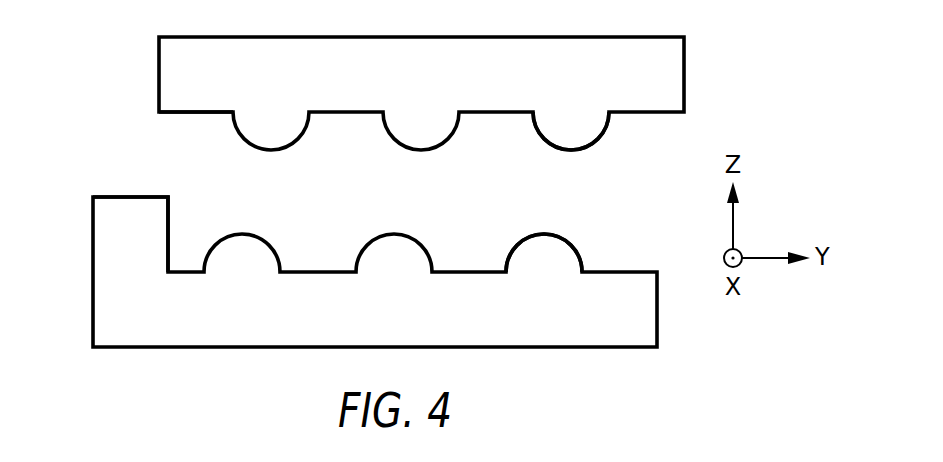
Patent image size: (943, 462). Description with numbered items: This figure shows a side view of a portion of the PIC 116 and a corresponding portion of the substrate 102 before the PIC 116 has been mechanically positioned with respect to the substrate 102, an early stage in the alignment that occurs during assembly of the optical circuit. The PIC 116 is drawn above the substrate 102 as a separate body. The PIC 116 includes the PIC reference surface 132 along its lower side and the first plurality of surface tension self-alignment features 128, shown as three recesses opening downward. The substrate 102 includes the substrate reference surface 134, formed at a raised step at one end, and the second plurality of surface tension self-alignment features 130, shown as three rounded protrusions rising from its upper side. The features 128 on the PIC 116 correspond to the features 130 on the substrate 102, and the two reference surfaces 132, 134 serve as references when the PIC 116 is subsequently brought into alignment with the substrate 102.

The substrate 102 is at (92, 296).
The PIC 116 is at (158, 71).
The first plurality of surface tension self-alignment features 128 is at (609, 136).
The second plurality of surface tension self-alignment features 130 is at (580, 257).
The PIC reference surface 132 is at (189, 106).
The substrate reference surface 134 is at (152, 205).